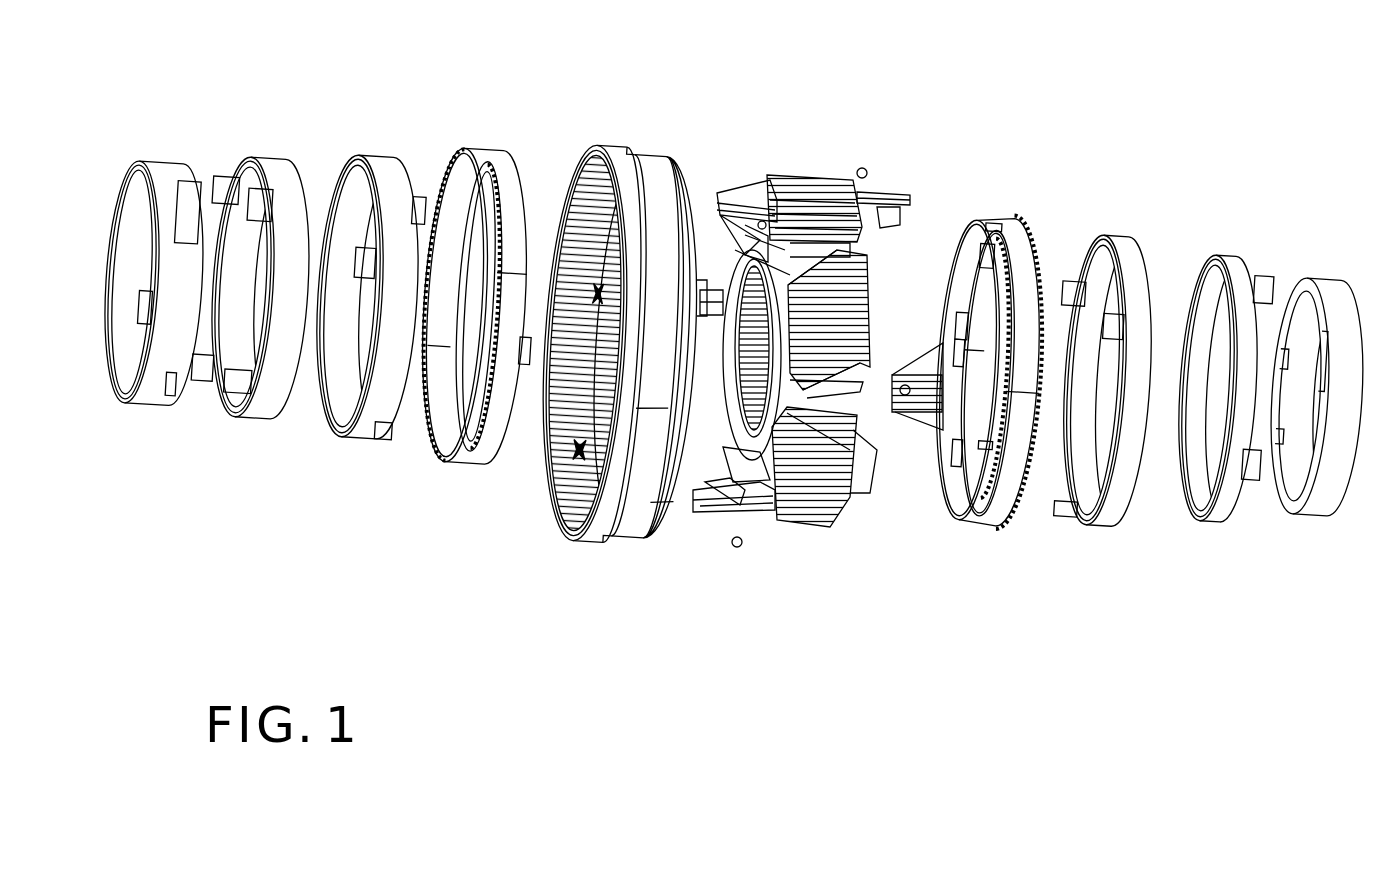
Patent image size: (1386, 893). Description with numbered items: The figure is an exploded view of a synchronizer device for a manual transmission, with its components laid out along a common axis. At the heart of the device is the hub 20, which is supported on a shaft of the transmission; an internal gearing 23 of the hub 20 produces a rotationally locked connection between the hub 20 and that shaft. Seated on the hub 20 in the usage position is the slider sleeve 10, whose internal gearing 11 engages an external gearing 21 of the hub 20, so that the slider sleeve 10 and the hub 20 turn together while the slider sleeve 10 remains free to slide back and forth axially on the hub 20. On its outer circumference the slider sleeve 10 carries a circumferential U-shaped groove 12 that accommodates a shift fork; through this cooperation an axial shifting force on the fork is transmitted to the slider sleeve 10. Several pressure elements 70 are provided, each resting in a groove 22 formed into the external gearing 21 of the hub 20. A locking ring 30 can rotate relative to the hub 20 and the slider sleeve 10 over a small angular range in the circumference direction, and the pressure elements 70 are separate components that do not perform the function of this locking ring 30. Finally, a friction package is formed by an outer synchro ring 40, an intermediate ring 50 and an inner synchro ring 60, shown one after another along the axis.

The slider sleeve 10 is at (663, 152).
The internal gearing 11 is at (573, 190).
The U-shaped groove 12 is at (635, 165).
The hub 20 is at (808, 173).
The external gearing 21 is at (785, 173).
The groove 22 is at (767, 177).
The internal gearing 23 is at (710, 512).
The locking ring 30 is at (1002, 213).
The outer synchro ring 40 is at (1113, 237).
The intermediate ring 50 is at (1225, 257).
The inner synchro ring 60 is at (1330, 277).
The pressure element 70 is at (887, 187).